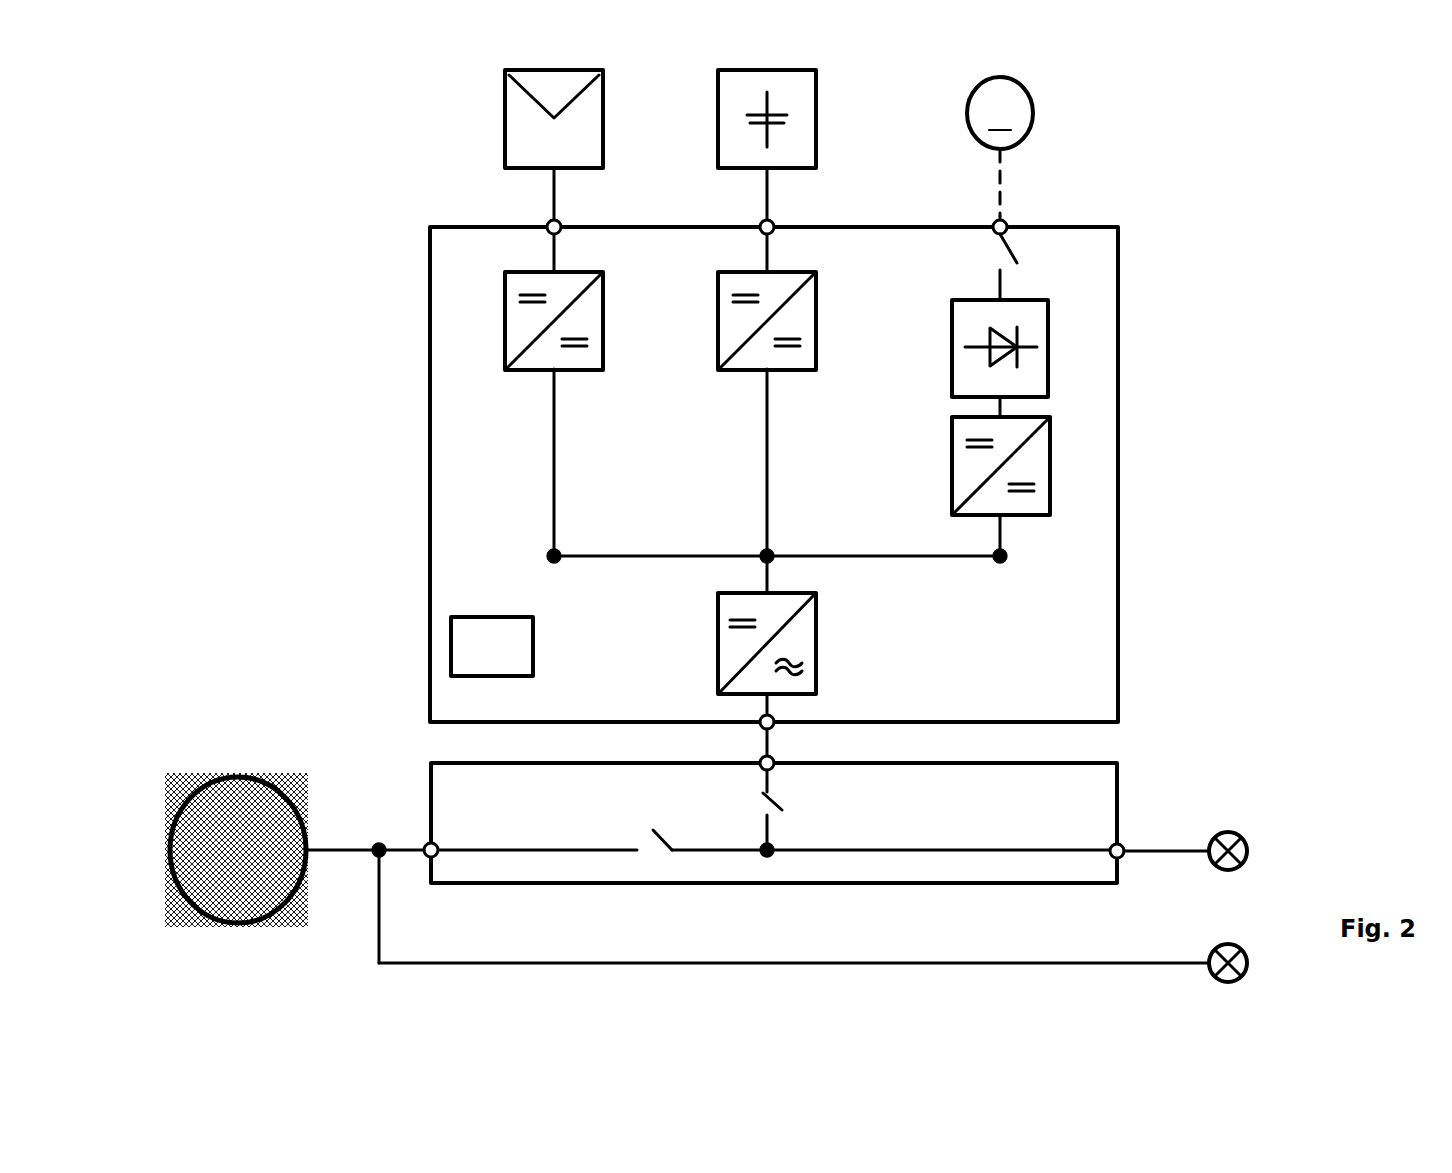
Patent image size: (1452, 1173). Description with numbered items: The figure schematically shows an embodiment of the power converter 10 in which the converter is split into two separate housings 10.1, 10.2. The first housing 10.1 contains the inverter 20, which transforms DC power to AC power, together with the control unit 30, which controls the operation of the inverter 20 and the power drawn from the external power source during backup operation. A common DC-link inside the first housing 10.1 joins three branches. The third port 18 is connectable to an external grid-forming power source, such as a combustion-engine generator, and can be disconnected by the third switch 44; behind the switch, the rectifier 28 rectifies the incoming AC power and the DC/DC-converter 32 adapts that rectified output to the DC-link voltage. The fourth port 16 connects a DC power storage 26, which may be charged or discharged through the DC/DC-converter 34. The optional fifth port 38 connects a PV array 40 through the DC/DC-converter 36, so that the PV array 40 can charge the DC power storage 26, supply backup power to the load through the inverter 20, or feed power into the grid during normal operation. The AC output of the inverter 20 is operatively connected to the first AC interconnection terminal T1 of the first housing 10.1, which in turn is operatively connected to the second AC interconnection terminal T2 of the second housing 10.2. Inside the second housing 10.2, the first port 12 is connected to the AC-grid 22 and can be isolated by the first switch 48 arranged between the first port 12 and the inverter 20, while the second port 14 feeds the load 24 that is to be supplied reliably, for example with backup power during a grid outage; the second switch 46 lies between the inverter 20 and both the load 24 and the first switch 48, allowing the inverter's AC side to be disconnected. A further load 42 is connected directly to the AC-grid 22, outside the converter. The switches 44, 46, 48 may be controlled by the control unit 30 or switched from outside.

The power converter 10 is at (1178, 716).
The first housing 10.1 is at (1105, 265).
The second housing 10.2 is at (1016, 803).
The first port 12 is at (437, 846).
The second port 14 is at (1111, 846).
The fourth port 16 is at (760, 221).
The third port 18 is at (1008, 222).
The inverter 20 is at (817, 667).
The AC-grid 22 is at (175, 773).
The load 24 is at (1243, 838).
The DC power storage 26 is at (817, 132).
The rectifier 28 is at (951, 353).
The control unit 30 is at (506, 660).
The DC/DC-converter 32 is at (1021, 517).
The DC/DC-converter 34 is at (788, 371).
The DC/DC-converter 36 is at (575, 371).
The fifth port 38 is at (547, 221).
The PV array 40 is at (546, 160).
The load 42 is at (1243, 950).
The third switch 44 is at (988, 256).
The second switch 46 is at (752, 805).
The first switch 48 is at (647, 812).
The first AC interconnection terminal T1 is at (760, 728).
The second AC interconnection terminal T2 is at (776, 763).